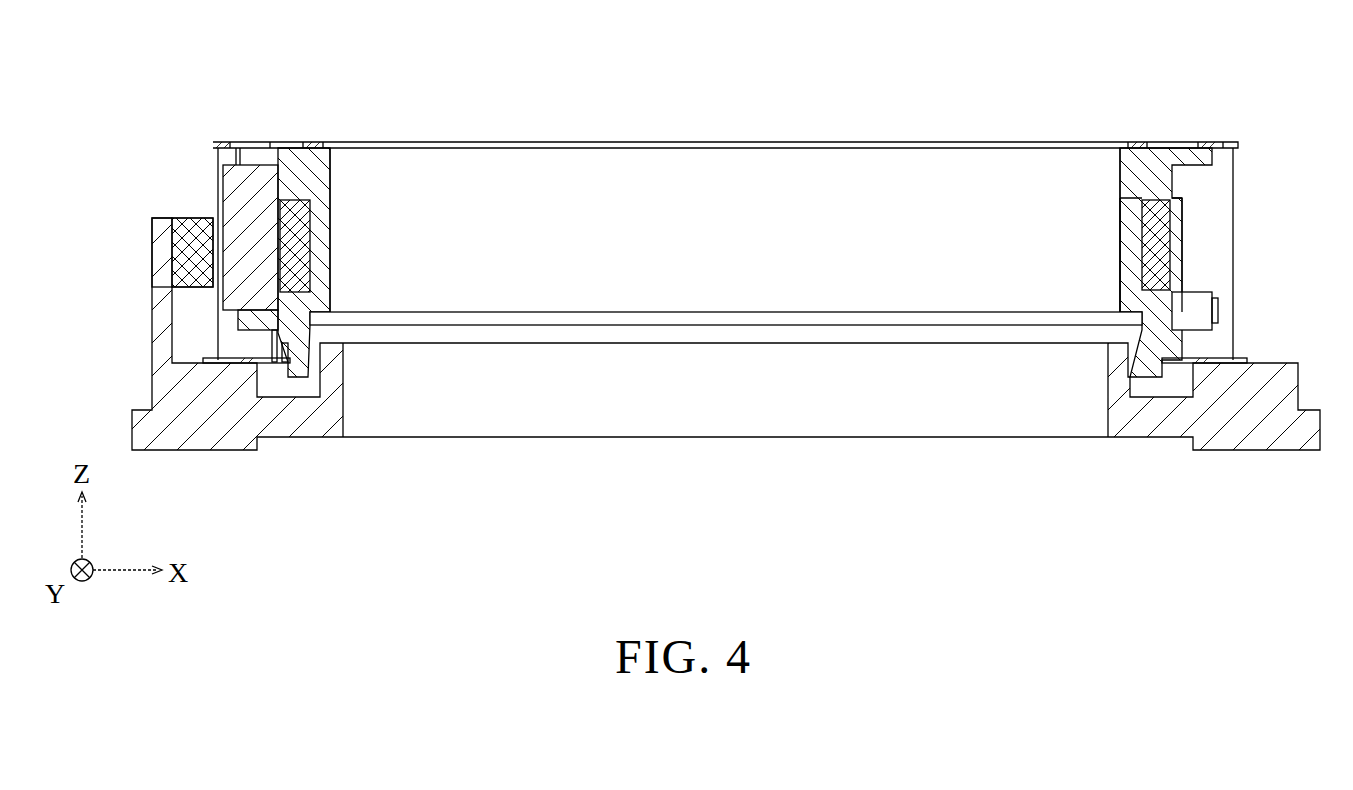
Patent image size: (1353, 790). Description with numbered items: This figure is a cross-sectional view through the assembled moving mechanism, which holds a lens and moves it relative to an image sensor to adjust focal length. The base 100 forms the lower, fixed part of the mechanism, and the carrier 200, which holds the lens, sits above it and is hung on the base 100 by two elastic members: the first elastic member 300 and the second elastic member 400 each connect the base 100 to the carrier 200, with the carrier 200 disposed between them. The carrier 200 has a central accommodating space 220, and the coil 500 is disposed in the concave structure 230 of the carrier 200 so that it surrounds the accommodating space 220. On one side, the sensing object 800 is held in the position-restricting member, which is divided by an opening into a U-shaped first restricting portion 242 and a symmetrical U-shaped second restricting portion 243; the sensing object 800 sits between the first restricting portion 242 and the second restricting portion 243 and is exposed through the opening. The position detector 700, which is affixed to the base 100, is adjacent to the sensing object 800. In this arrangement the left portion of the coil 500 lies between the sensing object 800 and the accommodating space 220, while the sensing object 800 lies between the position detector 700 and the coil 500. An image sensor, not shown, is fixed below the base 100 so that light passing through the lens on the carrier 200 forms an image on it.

The base 100 is at (205, 387).
The carrier 200 is at (1162, 160).
The accommodating space 220 is at (724, 205).
The concave structure 230 is at (1148, 222).
The first restricting portion 242 is at (236, 160).
The second restricting portion 243 is at (252, 320).
The first elastic member 300 is at (1243, 360).
The second elastic member 400 is at (1232, 143).
The coil 500 is at (295, 265).
The position detector 700 is at (193, 237).
The sensing object 800 is at (248, 193).